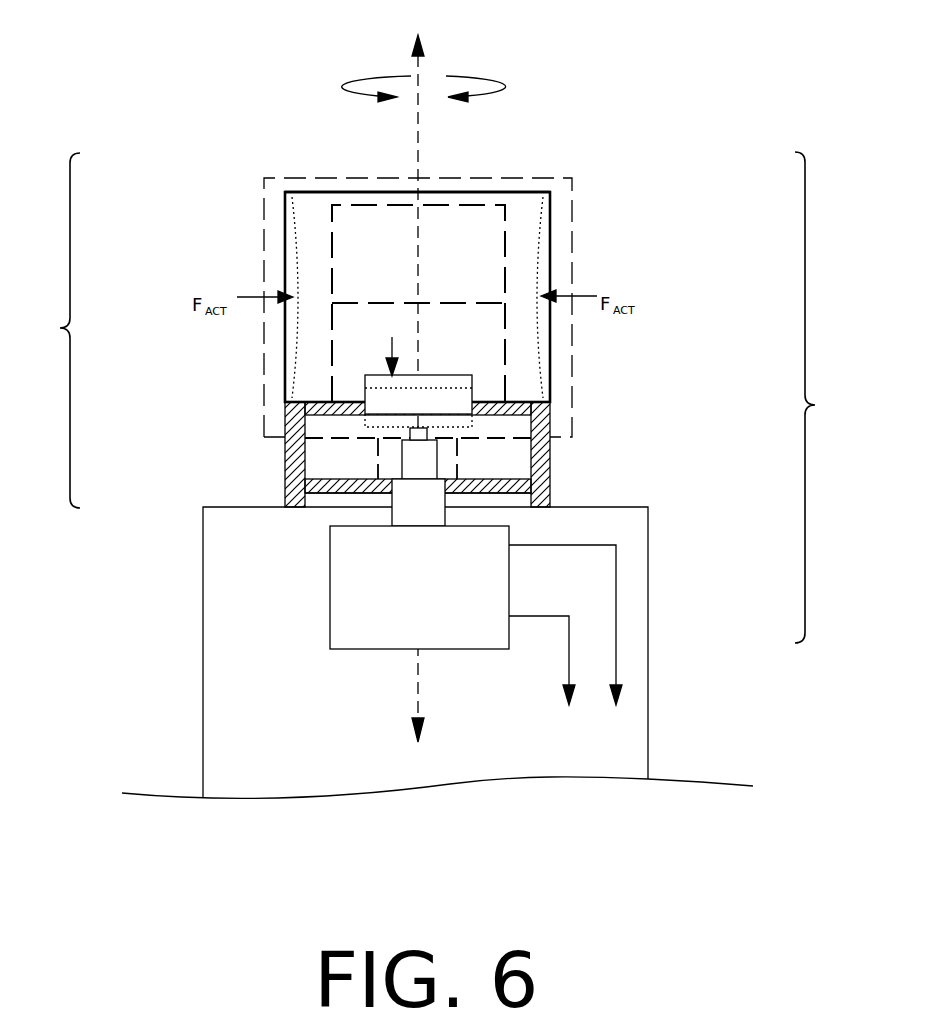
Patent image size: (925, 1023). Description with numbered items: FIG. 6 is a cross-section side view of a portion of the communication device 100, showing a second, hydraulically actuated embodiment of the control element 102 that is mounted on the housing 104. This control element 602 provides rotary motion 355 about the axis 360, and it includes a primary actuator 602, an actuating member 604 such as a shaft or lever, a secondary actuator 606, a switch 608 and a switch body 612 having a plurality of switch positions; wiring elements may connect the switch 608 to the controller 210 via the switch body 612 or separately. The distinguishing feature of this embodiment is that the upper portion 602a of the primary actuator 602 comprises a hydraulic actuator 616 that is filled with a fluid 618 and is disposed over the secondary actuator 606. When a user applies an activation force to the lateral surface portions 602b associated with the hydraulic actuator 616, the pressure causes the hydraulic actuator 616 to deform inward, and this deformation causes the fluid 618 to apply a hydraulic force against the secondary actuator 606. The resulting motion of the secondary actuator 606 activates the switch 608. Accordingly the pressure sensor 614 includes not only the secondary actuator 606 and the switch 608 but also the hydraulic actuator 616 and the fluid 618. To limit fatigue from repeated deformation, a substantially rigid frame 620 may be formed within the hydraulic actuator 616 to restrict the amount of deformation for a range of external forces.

The communication device 100 is at (115, 640).
The control element 102 is at (869, 424).
The housing 104 is at (296, 597).
The controller 210 is at (570, 656).
The rotary motion 355 is at (393, 77).
The axis 360 is at (417, 155).
The control element / primary actuator 602 is at (46, 334).
The upper portion of primary actuator 602a is at (343, 192).
The lateral surface portions 602b is at (553, 478).
The actuating member 604 is at (392, 518).
The secondary actuator 606 is at (463, 375).
The switch 608 is at (440, 440).
The switch body 612 is at (496, 604).
The pressure sensor 614 is at (573, 254).
The hydraulic actuator 616 is at (492, 192).
The fluid 618 is at (383, 237).
The rigid frame 620 is at (332, 388).